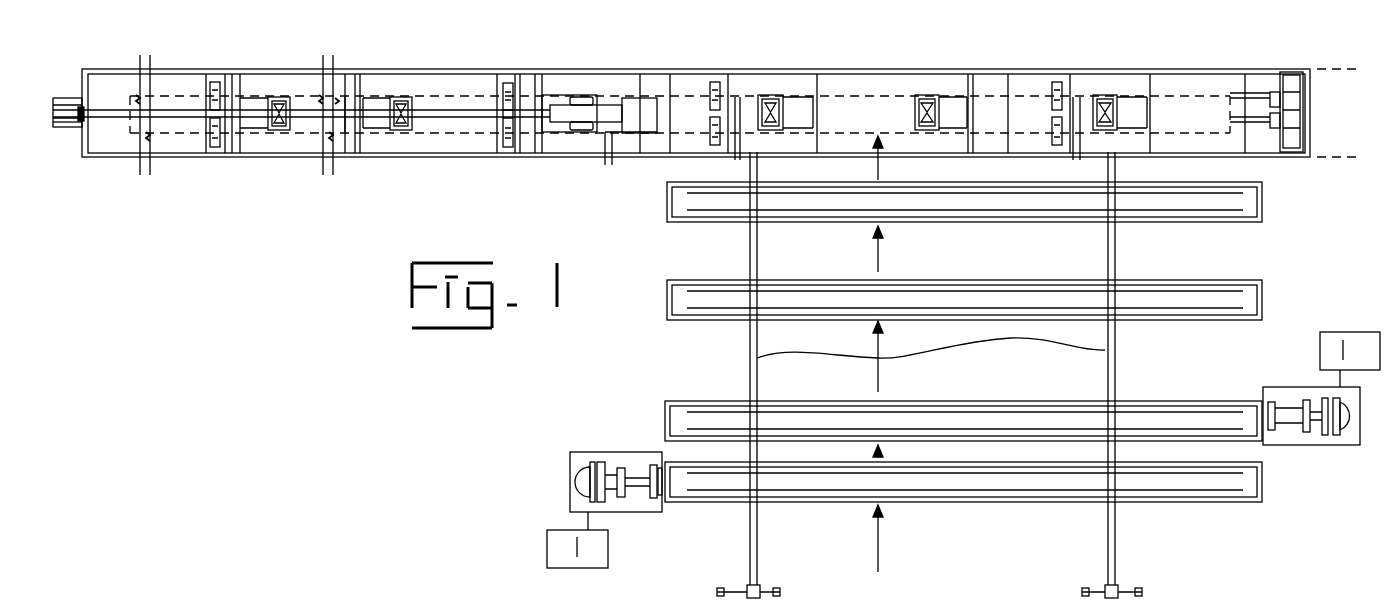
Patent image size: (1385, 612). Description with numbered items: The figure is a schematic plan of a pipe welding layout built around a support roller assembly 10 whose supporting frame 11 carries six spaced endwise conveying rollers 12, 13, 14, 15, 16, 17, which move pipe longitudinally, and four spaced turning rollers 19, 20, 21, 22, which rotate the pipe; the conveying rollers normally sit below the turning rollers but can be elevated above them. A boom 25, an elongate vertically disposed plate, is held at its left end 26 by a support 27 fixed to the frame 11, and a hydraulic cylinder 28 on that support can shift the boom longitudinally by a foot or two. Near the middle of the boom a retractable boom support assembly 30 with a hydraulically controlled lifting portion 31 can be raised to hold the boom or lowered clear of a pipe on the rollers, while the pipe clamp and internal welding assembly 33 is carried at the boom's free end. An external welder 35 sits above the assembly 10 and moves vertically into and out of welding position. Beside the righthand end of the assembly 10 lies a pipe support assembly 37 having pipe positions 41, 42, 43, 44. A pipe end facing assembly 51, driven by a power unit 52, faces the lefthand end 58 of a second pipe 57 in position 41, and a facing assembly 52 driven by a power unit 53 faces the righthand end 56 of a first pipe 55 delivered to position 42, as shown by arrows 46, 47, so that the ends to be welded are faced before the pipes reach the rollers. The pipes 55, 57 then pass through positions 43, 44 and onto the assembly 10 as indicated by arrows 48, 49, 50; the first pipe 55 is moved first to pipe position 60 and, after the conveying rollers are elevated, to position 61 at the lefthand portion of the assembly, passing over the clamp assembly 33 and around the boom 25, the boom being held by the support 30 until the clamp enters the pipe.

The support roller assembly 10 is at (548, 165).
The supporting frame 11 is at (120, 160).
The endwise conveying roller 12 is at (278, 100).
The endwise conveying roller 13 is at (401, 102).
The endwise conveying roller 14 is at (583, 97).
The endwise conveying roller 15 is at (772, 102).
The endwise conveying roller 16 is at (924, 102).
The endwise conveying roller 17 is at (1107, 98).
The turning roller 19 is at (217, 82).
The turning roller 20 is at (508, 84).
The turning roller 21 is at (717, 82).
The turning roller 22 is at (1056, 82).
The boom 25 is at (107, 108).
The left end of boom 26 is at (80, 106).
The support 27 is at (65, 130).
The hydraulic cylinder 28 is at (63, 97).
The retractable boom support assembly 30 is at (336, 100).
The hydraulically controlled lifting portion 31 is at (347, 102).
The pipe clamp and internal welding assembly 33 is at (609, 100).
The external welder 35 is at (648, 97).
The pipe support assembly 37 is at (931, 352).
The pipe position 41 is at (975, 503).
The pipe position 42 is at (968, 399).
The pipe position 43 is at (963, 279).
The pipe position 44 is at (915, 222).
The arrow 46 is at (880, 548).
The arrow 47 is at (880, 455).
The arrow 48 is at (877, 380).
The arrow 49 is at (877, 257).
The arrow 50 is at (877, 172).
The pipe end facing assembly 51 is at (628, 512).
The power unit / end facing assembly 52 is at (573, 570).
The power unit 53 is at (1332, 332).
The first pipe 55 is at (445, 92).
The righthand end of first pipe 56 is at (1270, 390).
The second pipe 57 is at (850, 92).
The lefthand end of second pipe 58 is at (663, 468).
The pipe position 60 is at (878, 92).
The pipe position 61 is at (480, 92).